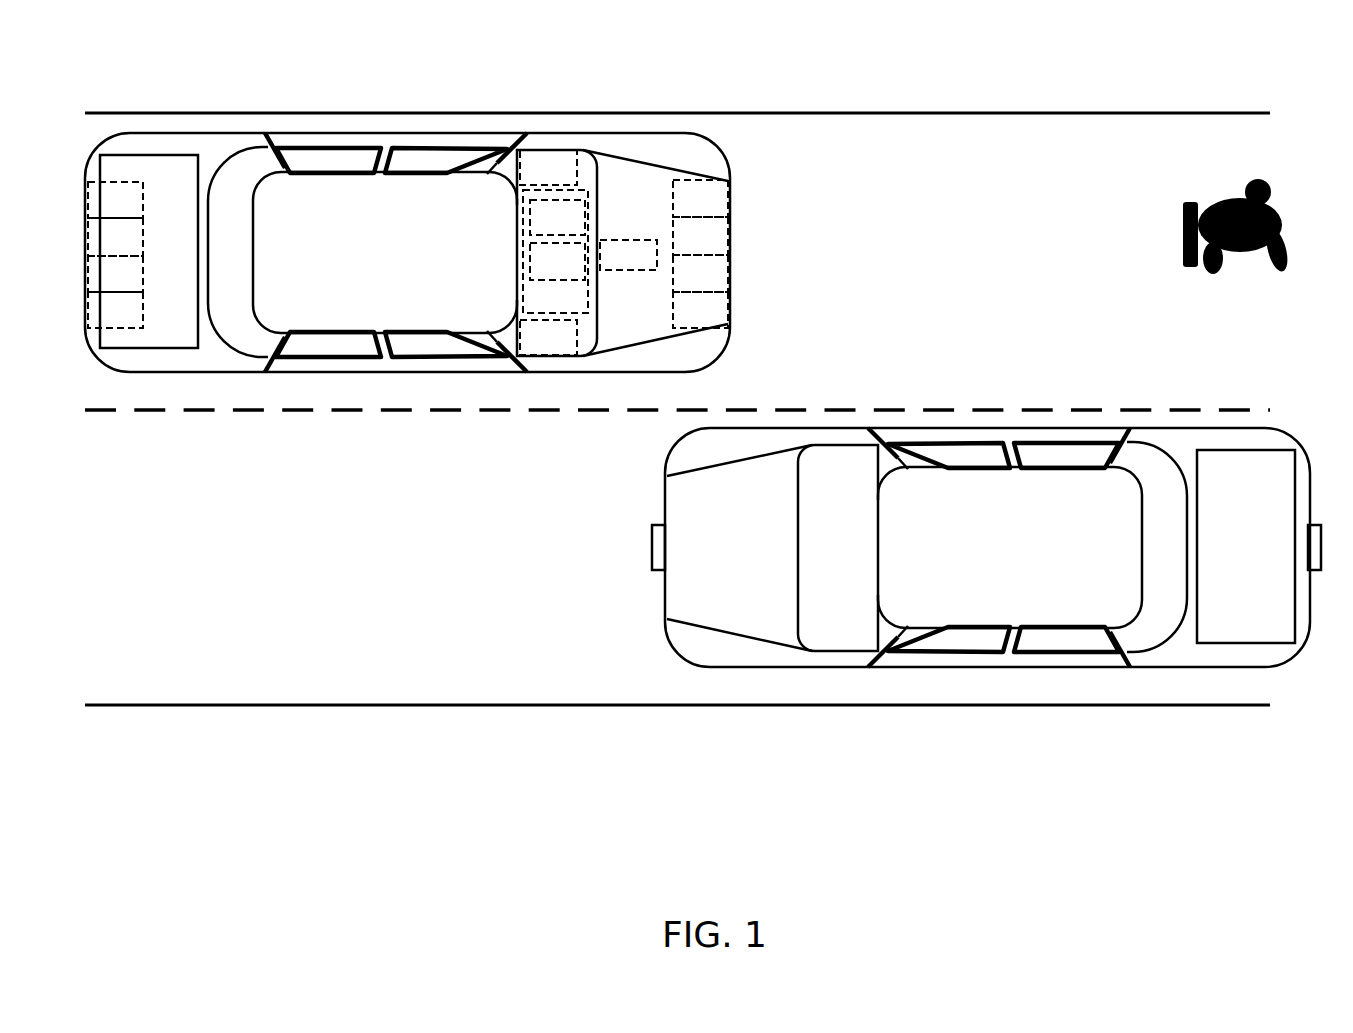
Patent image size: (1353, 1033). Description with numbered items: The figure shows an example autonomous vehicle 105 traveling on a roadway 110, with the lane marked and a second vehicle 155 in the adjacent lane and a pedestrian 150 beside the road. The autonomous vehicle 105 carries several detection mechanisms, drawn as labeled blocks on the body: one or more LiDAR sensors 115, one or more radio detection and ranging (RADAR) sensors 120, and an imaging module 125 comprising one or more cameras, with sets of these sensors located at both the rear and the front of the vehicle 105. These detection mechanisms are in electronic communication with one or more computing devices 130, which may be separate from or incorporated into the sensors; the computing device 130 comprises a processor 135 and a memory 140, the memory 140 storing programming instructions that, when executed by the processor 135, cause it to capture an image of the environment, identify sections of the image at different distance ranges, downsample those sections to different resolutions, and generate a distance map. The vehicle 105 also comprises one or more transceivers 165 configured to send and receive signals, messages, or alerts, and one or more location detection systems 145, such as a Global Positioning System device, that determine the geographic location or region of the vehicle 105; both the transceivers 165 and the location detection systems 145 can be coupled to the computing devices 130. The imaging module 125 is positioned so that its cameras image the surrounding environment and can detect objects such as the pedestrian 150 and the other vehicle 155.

The autonomous vehicle 105 is at (688, 130).
The roadway 110 is at (798, 145).
The LiDAR sensor 115 is at (408, 236).
The radio detection and ranging (RADAR) sensor 120 is at (408, 273).
The imaging module 125 is at (408, 254).
The computing device 130 is at (555, 251).
The processor 135 is at (557, 217).
The memory 140 is at (557, 261).
The location detection system 145 is at (548, 252).
The pedestrian 150 is at (1183, 228).
The vehicle 155 is at (665, 483).
The transceiver 165 is at (628, 255).